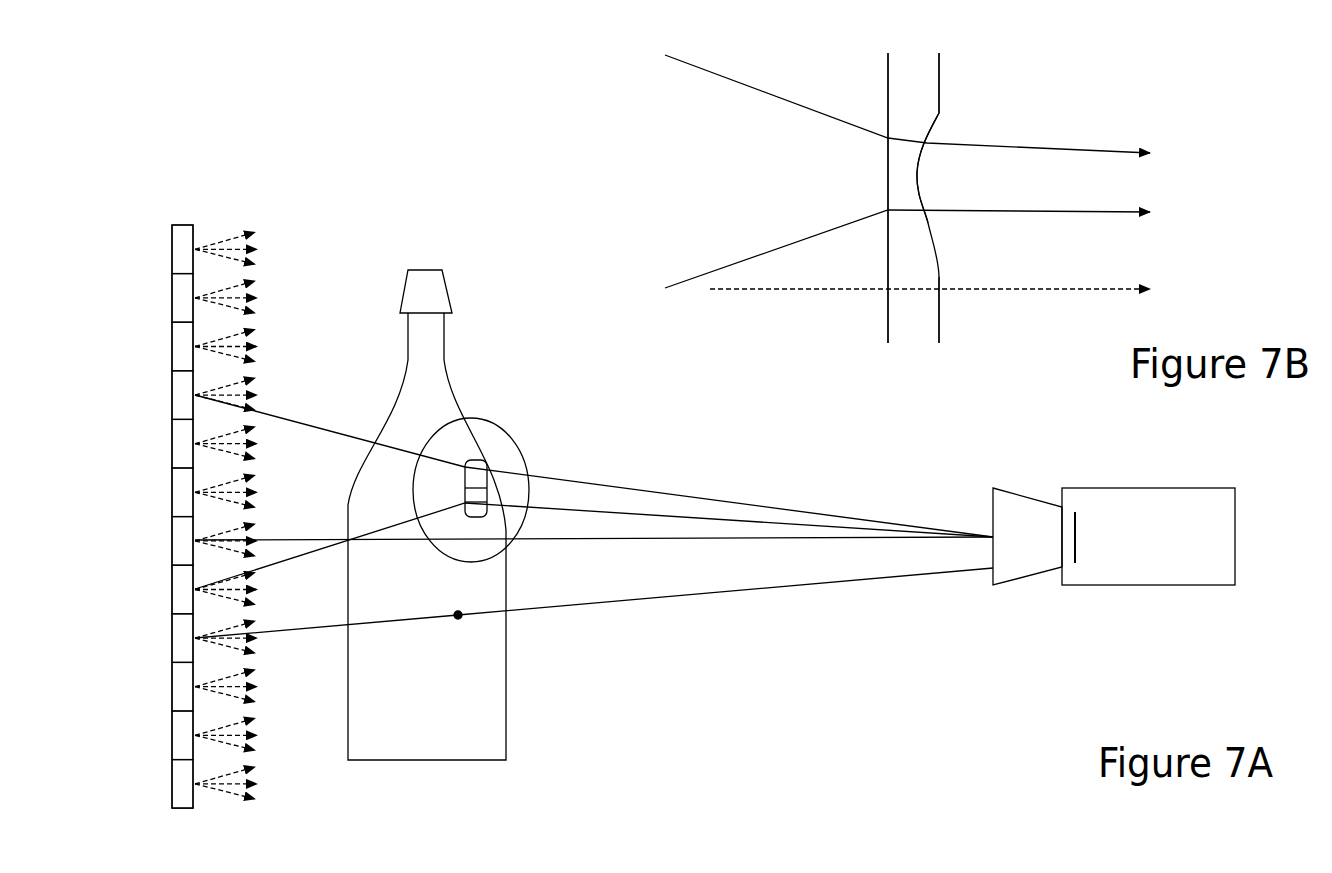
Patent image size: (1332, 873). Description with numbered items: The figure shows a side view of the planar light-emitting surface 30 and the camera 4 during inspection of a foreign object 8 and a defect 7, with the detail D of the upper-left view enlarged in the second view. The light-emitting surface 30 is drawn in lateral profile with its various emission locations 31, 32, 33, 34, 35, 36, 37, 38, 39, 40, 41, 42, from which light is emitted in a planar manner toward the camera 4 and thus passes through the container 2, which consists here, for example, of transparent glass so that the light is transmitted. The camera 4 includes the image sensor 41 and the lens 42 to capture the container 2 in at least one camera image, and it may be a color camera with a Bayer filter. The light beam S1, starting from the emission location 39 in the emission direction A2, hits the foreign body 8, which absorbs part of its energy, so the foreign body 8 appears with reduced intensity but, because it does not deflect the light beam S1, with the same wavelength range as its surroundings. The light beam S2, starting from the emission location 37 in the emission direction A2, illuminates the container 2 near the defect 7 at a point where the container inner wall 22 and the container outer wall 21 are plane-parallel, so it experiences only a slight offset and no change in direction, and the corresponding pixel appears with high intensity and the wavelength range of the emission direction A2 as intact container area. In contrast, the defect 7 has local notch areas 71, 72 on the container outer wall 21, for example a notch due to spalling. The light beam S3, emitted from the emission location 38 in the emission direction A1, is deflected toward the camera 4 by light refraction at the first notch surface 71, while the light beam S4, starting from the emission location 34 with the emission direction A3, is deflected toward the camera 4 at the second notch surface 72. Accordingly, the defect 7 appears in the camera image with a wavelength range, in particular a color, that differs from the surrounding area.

In FIG. 7A, the light-emitting surface 30 is at (186, 214).
In FIG. 7A, the emission location 31 is at (182, 249).
In FIG. 7A, the emission location 32 is at (182, 298).
In FIG. 7A, the emission location 33 is at (182, 346).
In FIG. 7A, the emission location 34 is at (182, 395).
In FIG. 7A, the emission location 35 is at (182, 444).
In FIG. 7A, the emission location 36 is at (182, 492).
In FIG. 7A, the emission location 37 is at (182, 541).
In FIG. 7A, the emission location 38 is at (182, 589).
In FIG. 7A, the emission location 39 is at (182, 638).
In FIG. 7A, the emission location 40 is at (182, 687).
In FIG. 7A, the image sensor 41 is at (182, 735).
In FIG. 7A, the lens 42 is at (182, 784).
In FIG. 7A, the container 2 is at (440, 338).
In FIG. 7B, the container 2 is at (900, 326).
In FIG. 7B, the container outer wall 21 is at (940, 327).
In FIG. 7B, the container inner wall 22 is at (888, 256).
In FIG. 7A, the defect 7 is at (481, 457).
In FIG. 7B, the defect 7 is at (966, 82).
In FIG. 7B, the first notch surface 71 is at (918, 181).
In FIG. 7B, the second notch surface 72 is at (937, 133).
In FIG. 7A, the foreign object 8 is at (462, 618).
In FIG. 7A, the camera 4 is at (1259, 487).
In FIG. 7A, the detail D is at (524, 452).
In FIG. 7B, the detail D is at (1125, 82).
In FIG. 7A, the light beam S1 is at (392, 623).
In FIG. 7A, the light beam S2 is at (330, 538).
In FIG. 7B, the light beam S2 is at (1045, 291).
In FIG. 7A, the light beam S3 is at (322, 548).
In FIG. 7B, the light beam S3 is at (1095, 213).
In FIG. 7A, the light beam S4 is at (327, 432).
In FIG. 7B, the light beam S4 is at (1090, 150).
In FIG. 7A, the emission direction A1 is at (250, 571).
In FIG. 7A, the emission direction A2 is at (240, 537).
In FIG. 7A, the emission direction A3 is at (233, 411).